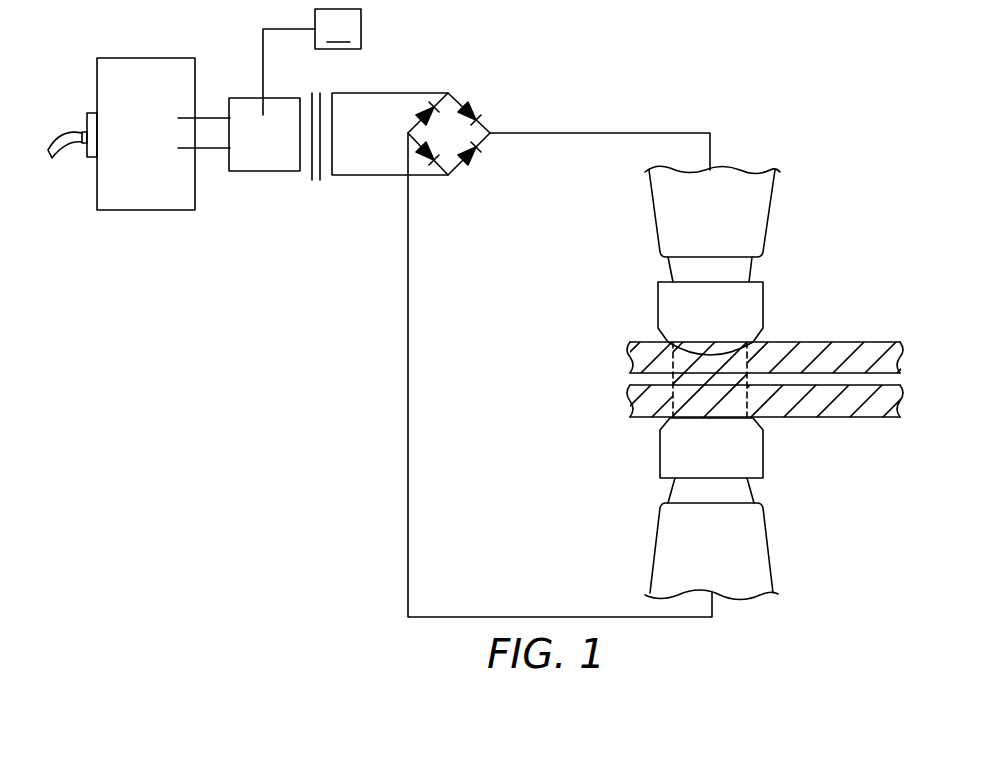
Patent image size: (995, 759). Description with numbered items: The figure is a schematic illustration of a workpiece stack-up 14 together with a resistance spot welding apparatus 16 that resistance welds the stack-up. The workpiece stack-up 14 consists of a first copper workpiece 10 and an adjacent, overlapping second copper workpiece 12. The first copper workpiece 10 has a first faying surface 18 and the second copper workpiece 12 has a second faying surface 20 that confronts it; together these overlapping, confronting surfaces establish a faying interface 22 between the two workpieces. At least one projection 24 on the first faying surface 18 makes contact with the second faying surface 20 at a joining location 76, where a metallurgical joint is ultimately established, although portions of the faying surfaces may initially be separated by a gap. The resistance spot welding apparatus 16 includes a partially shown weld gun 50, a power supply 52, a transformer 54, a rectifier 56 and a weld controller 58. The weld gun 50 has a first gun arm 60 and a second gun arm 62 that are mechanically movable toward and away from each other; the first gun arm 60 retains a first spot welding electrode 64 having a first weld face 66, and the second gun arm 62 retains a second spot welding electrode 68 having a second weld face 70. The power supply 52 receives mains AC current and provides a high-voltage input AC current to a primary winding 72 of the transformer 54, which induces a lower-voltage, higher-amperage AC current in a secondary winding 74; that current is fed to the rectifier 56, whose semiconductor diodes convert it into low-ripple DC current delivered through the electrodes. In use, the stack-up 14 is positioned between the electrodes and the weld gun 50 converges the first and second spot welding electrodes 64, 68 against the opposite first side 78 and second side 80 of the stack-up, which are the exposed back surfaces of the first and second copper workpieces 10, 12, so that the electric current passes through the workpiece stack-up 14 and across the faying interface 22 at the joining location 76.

The first copper workpiece 10 is at (842, 340).
The second copper workpiece 12 is at (823, 417).
The workpiece stack-up 14 is at (760, 378).
The resistance spot welding apparatus 16 is at (593, 112).
The first faying surface 18 is at (768, 383).
The second faying surface 20 is at (788, 380).
The faying interface 22 is at (630, 380).
The projection 24 is at (695, 372).
The weld gun 50 is at (751, 362).
The power supply 52 is at (147, 193).
The transformer 54 is at (338, 179).
The rectifier 56 is at (482, 142).
The weld controller 58 is at (312, 62).
The first gun arm 60 is at (752, 210).
The second gun arm 62 is at (755, 527).
The first spot welding electrode 64 is at (677, 310).
The first weld face 66 is at (717, 347).
The second spot welding electrode 68 is at (688, 448).
The second weld face 70 is at (717, 405).
The primary winding 72 is at (300, 150).
The secondary winding 74 is at (332, 147).
The joining location 76 is at (760, 350).
The first side 78 is at (892, 340).
The second side 80 is at (873, 417).